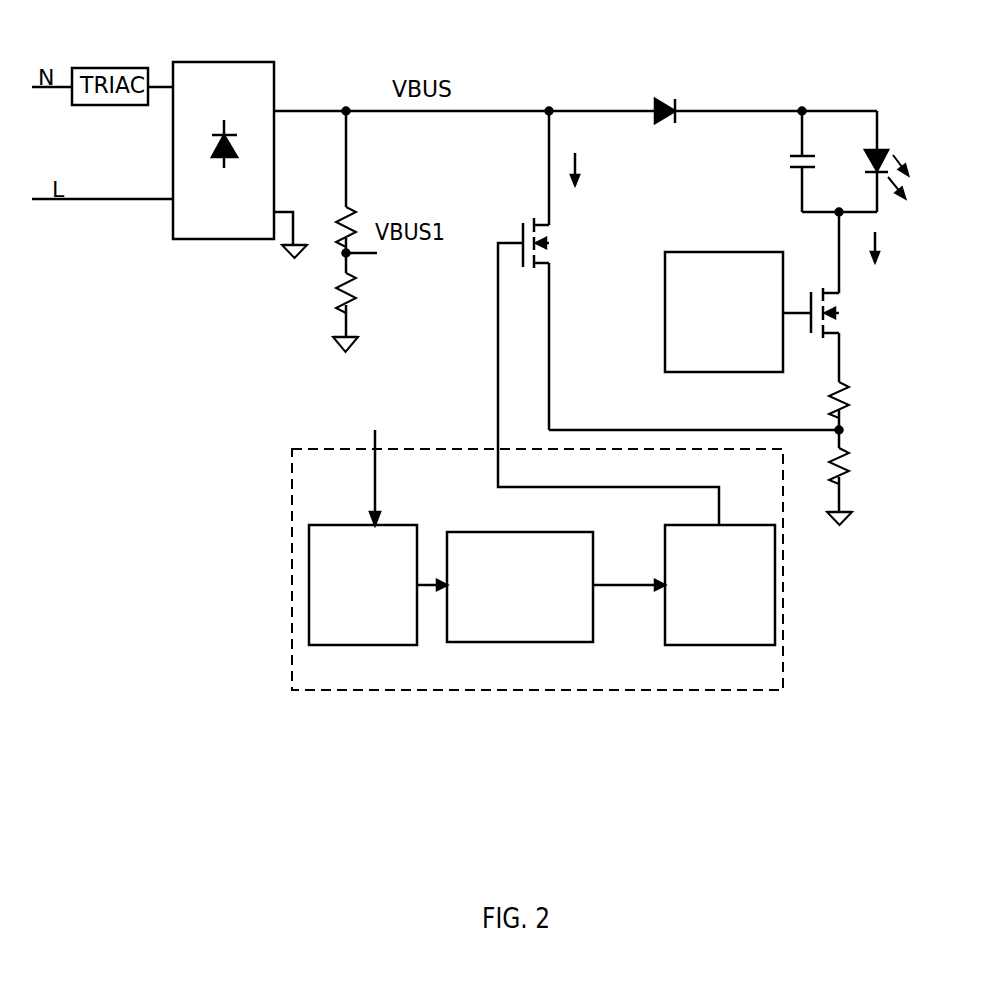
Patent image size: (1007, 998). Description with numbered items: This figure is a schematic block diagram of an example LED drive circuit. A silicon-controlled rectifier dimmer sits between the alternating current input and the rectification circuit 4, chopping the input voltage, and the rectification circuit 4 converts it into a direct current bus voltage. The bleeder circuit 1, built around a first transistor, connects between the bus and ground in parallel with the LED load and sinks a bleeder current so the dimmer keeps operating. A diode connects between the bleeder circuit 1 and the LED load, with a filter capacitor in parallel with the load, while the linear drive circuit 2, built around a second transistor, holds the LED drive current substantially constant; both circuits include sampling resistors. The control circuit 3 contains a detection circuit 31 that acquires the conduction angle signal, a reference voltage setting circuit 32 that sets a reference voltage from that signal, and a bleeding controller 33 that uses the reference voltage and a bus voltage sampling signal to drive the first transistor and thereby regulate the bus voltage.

The bleeder circuit 1 is at (596, 289).
The linear drive circuit 2 is at (910, 410).
The control circuit 3 is at (563, 542).
The rectification circuit 4 is at (274, 84).
The detection circuit 31 is at (350, 525).
The reference voltage setting circuit 32 is at (572, 532).
The bleeding controller 33 is at (747, 525).